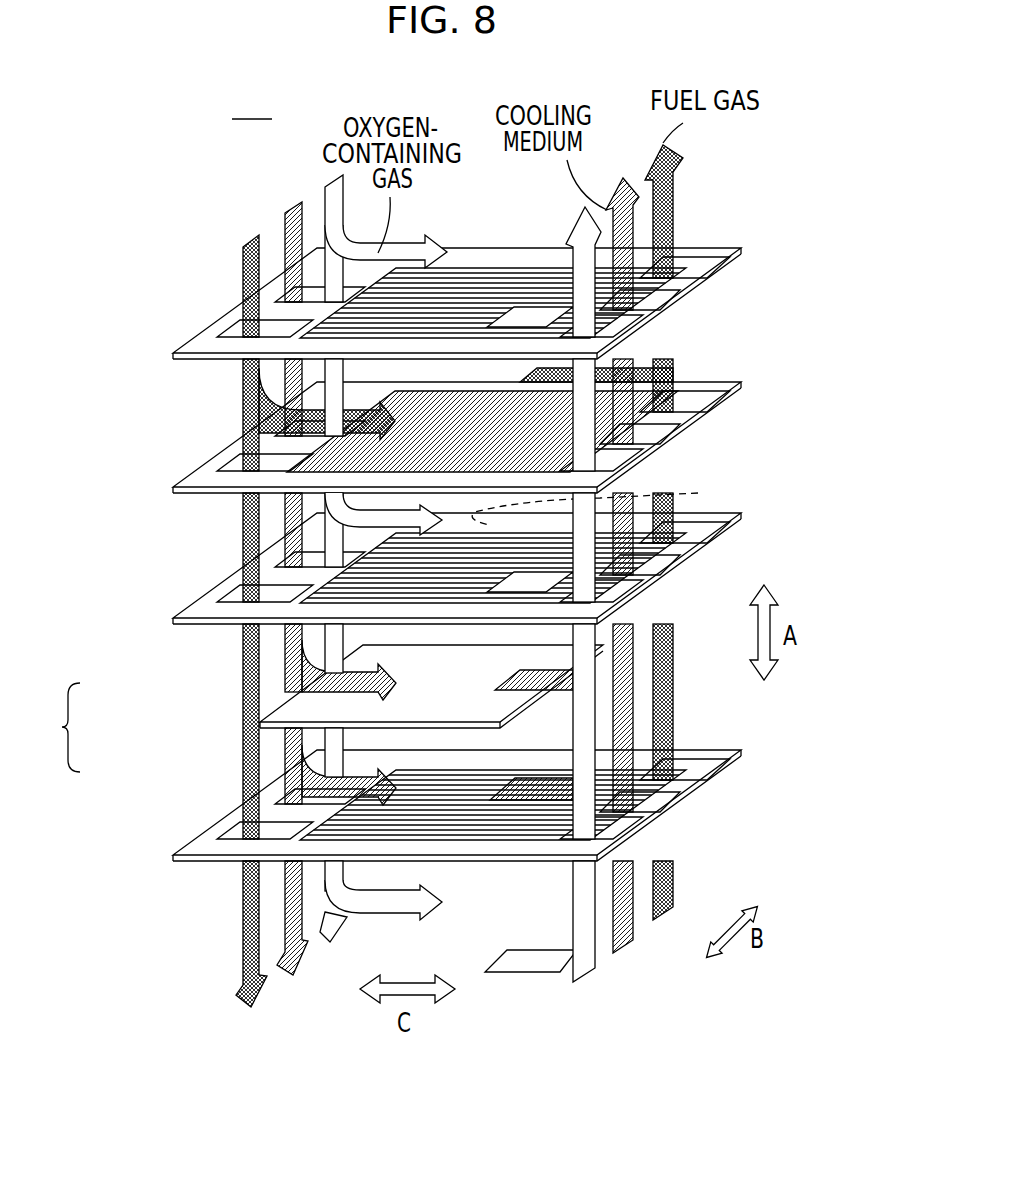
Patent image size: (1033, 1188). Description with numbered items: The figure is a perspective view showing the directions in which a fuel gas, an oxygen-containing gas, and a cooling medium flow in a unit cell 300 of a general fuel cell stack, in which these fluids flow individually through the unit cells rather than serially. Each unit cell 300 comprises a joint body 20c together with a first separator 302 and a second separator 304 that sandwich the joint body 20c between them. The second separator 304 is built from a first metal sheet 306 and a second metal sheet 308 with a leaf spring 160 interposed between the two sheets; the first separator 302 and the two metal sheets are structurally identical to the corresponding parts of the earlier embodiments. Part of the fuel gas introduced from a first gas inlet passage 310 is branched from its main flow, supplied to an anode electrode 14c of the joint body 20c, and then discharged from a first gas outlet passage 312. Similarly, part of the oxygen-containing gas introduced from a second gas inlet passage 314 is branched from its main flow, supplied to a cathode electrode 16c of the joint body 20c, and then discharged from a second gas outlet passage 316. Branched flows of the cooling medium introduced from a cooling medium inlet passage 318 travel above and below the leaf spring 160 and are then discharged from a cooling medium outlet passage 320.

The unit cell 300 is at (252, 105).
The first separator 302 is at (721, 251).
The second separator 304 is at (50, 727).
The first metal sheet 306 is at (187, 640).
The second metal sheet 308 is at (177, 840).
The first gas inlet passage 310 is at (227, 328).
The first gas outlet passage 312 is at (680, 260).
The second gas inlet passage 314 is at (318, 258).
The second gas outlet passage 316 is at (625, 320).
The cooling medium inlet passage 318 is at (273, 283).
The cooling medium outlet passage 320 is at (647, 552).
The anode electrode 14c is at (615, 372).
The cathode electrode 16c is at (608, 501).
The joint body 20c is at (724, 379).
The leaf spring 160 is at (437, 690).